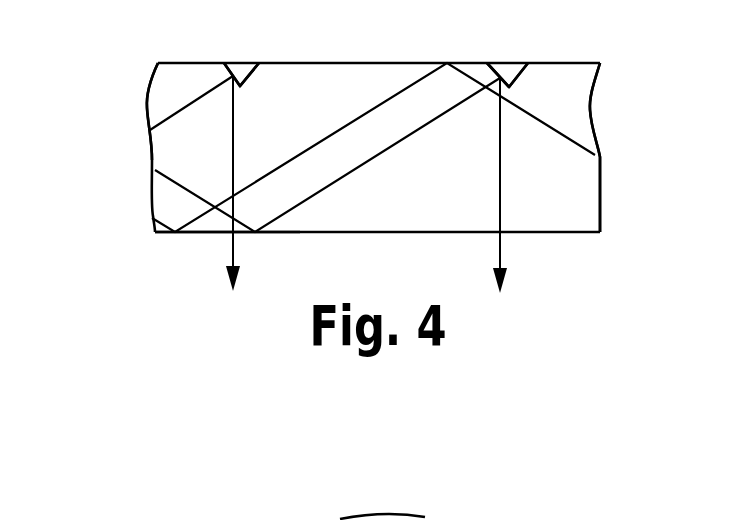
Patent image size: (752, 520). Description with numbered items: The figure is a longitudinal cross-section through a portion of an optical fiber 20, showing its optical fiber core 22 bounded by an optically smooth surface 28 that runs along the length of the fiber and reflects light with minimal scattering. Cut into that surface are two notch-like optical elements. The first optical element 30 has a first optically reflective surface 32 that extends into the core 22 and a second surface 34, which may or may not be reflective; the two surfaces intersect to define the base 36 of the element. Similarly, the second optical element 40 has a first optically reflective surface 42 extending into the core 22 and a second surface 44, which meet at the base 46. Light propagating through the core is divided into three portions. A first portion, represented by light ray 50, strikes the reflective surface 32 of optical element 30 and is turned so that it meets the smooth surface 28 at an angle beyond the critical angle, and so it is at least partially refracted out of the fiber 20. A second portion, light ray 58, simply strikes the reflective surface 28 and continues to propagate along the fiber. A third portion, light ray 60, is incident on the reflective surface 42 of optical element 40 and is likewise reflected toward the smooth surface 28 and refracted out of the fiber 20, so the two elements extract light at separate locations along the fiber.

The optical fiber 20 is at (130, 87).
The optical fiber core 22 is at (167, 101).
The optically smooth surface 28 is at (190, 234).
The optical element 30 is at (242, 62).
The first optically reflective surface 32 is at (232, 64).
The second surface 34 is at (251, 70).
The optical element 40 is at (509, 64).
The first optically reflective surface 42 is at (487, 72).
The second surface 44 is at (526, 73).
The light ray 50 is at (235, 246).
The light ray 58 is at (562, 132).
The light ray 60 is at (502, 246).
The base 36 is at (441, 519).
The base 46 is at (500, 519).